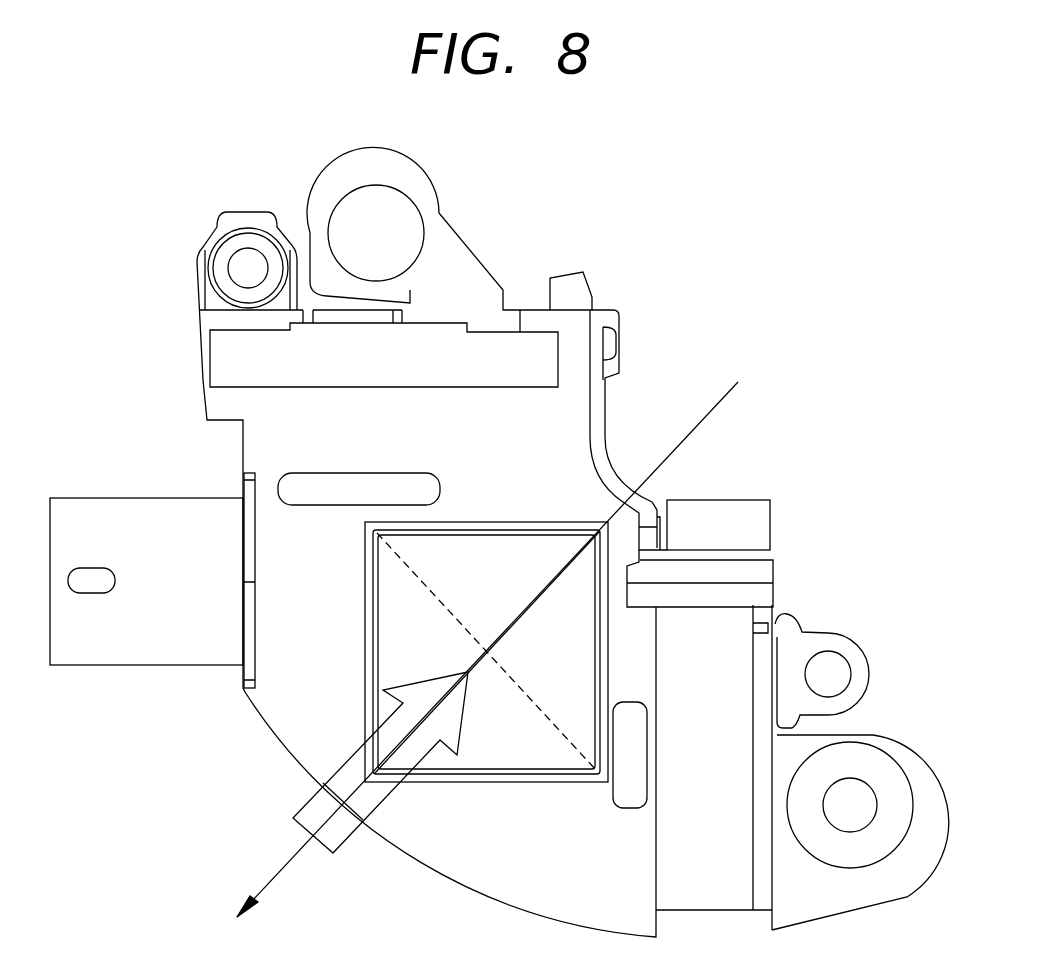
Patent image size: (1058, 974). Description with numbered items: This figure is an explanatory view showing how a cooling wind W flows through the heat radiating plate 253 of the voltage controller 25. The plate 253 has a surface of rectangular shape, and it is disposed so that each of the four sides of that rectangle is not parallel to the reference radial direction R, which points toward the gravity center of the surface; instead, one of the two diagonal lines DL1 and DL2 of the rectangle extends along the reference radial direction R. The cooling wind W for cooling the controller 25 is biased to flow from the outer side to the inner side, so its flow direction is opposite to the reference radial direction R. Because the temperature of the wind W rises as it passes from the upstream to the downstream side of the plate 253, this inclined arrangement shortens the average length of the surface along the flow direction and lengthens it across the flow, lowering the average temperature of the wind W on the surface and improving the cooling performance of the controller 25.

The voltage controller 25 is at (640, 263).
The heat radiating plate 253 is at (577, 633).
The diagonal line DL1 is at (418, 577).
The diagonal line DL2 is at (537, 600).
The reference radial direction R is at (708, 414).
The cooling wind W is at (300, 810).